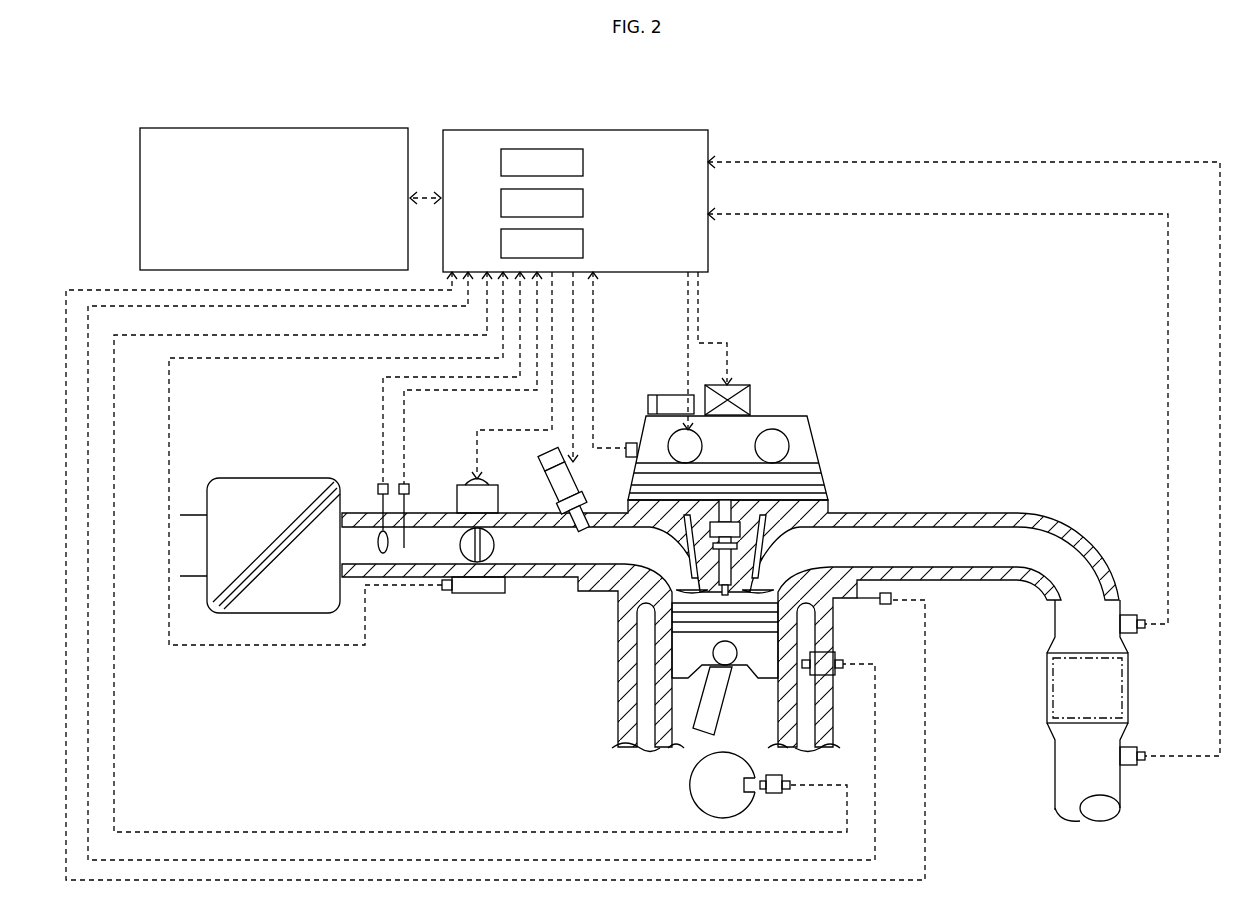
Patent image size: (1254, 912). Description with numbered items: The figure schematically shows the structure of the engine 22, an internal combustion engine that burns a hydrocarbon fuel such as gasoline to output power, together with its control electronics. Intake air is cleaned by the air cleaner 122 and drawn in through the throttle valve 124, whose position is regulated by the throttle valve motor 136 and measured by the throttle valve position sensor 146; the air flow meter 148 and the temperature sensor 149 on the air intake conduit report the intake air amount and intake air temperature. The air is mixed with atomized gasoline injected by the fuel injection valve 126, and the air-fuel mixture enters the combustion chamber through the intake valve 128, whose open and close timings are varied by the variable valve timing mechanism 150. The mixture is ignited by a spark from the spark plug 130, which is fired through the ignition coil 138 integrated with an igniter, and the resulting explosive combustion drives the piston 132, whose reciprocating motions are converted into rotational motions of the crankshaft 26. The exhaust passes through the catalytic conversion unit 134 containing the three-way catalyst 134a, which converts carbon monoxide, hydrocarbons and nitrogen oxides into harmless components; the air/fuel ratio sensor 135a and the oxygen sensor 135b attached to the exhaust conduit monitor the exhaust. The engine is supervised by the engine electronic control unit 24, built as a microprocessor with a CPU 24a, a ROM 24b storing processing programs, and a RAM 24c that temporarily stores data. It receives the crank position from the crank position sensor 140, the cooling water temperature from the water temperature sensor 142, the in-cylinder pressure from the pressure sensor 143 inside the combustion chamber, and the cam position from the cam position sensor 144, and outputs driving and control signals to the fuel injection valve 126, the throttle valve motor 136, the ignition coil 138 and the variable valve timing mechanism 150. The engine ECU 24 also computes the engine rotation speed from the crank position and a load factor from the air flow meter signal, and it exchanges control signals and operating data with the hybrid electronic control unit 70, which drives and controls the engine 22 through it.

The engine 22 is at (770, 364).
The engine electronic control unit 24 is at (575, 169).
The CPU 24a is at (583, 158).
The ROM 24b is at (583, 200).
The RAM 24c is at (583, 242).
The crankshaft 26 is at (690, 786).
The hybrid electronic control unit 70 is at (270, 127).
The air cleaner 122 is at (272, 478).
The throttle valve 124 is at (497, 522).
The fuel injection valve 126 is at (543, 538).
The intake valve 128 is at (680, 562).
The spark plug 130 is at (757, 582).
The piston 132 is at (690, 648).
The catalytic conversion unit 134 is at (1047, 665).
The three-way catalyst 134a is at (1185, 662).
The air/fuel ratio sensor 135a is at (1130, 614).
The oxygen sensor 135b is at (1128, 766).
The throttle valve motor 136 is at (459, 484).
The ignition coil 138 is at (752, 400).
The crank position sensor 140 is at (776, 794).
The water temperature sensor 142 is at (835, 656).
The pressure sensor 143 is at (888, 592).
The cam position sensor 144 is at (630, 442).
The throttle valve position sensor 146 is at (477, 594).
The air flow meter 148 is at (378, 485).
The temperature sensor 149 is at (409, 484).
The variable valve timing mechanism 150 is at (832, 448).